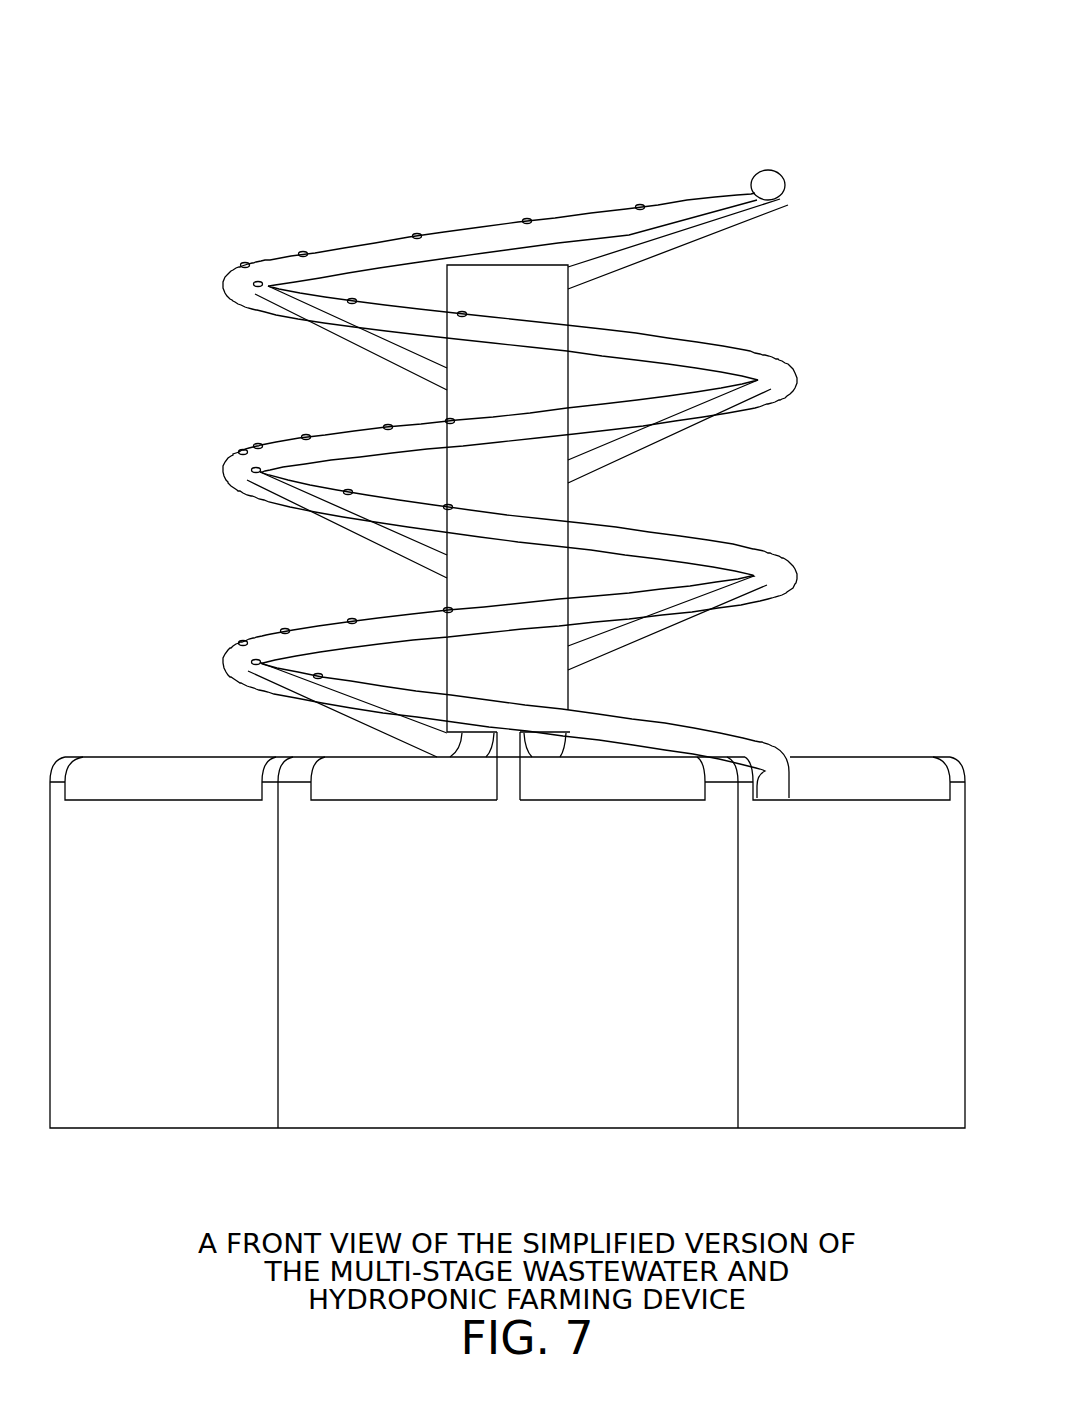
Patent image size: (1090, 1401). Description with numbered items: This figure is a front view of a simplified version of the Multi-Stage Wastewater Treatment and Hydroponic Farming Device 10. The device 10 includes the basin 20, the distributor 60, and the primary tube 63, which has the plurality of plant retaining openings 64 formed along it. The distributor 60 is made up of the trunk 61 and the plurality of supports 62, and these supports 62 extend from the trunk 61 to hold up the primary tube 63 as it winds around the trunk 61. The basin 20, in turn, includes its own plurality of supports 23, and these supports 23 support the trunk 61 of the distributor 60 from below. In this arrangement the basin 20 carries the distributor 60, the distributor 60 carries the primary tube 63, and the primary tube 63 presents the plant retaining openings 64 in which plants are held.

The Multi-Stage Wastewater Treatment and Hydroponic Farming Device 10 is at (156, 148).
The basin 20 is at (134, 1138).
The supports 23 is at (104, 788).
The distributor 60 is at (436, 153).
The trunk 61 is at (508, 511).
The supports 62 is at (597, 276).
The primary tube 63 is at (791, 201).
The plant retaining openings 64 is at (306, 440).